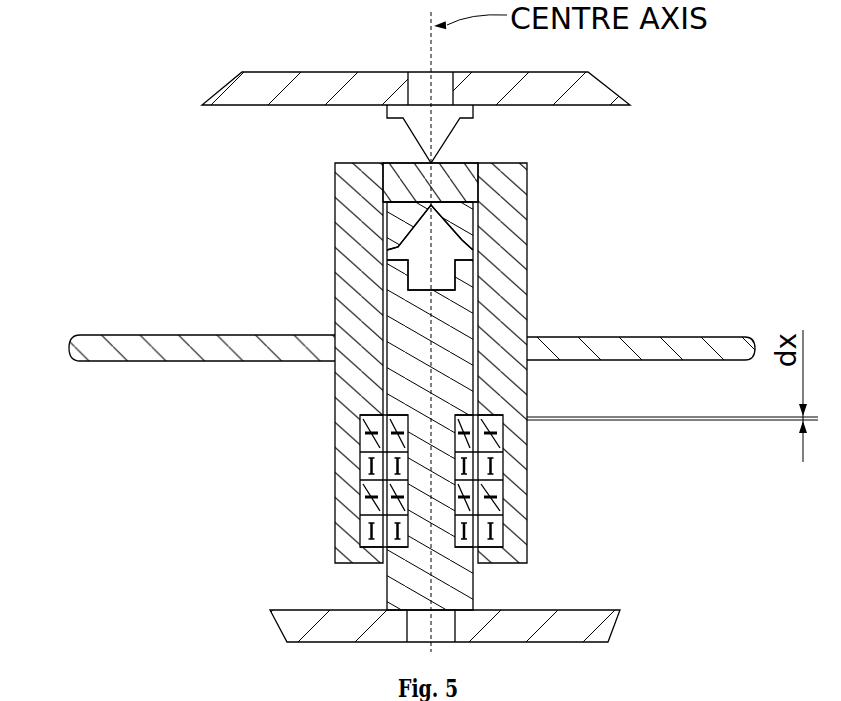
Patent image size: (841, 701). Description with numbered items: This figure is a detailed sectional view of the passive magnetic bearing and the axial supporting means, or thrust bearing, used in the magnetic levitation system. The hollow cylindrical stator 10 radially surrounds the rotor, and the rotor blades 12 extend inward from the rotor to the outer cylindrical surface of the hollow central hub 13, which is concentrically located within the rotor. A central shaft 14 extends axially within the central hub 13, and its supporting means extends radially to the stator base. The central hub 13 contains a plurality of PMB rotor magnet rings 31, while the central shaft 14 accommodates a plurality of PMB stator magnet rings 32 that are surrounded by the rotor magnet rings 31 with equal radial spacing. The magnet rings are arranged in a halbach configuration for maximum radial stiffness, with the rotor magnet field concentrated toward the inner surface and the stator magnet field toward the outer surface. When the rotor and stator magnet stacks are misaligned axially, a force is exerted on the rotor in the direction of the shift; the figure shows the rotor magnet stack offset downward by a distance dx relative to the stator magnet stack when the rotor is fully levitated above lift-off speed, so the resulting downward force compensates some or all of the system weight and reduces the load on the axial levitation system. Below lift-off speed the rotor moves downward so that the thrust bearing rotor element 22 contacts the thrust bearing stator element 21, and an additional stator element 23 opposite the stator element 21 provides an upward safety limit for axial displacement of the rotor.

The stator 10 is at (256, 112).
The rotor blades 12 is at (132, 331).
The central hub 13 is at (335, 498).
The central shaft 14 is at (418, 330).
The thrust bearing stator element 21 is at (433, 205).
The thrust bearing rotor element 22 is at (441, 184).
The additional stator element 23 is at (438, 151).
The PMB rotor magnet rings 31 is at (497, 530).
The PMB stator magnet rings 32 is at (476, 496).